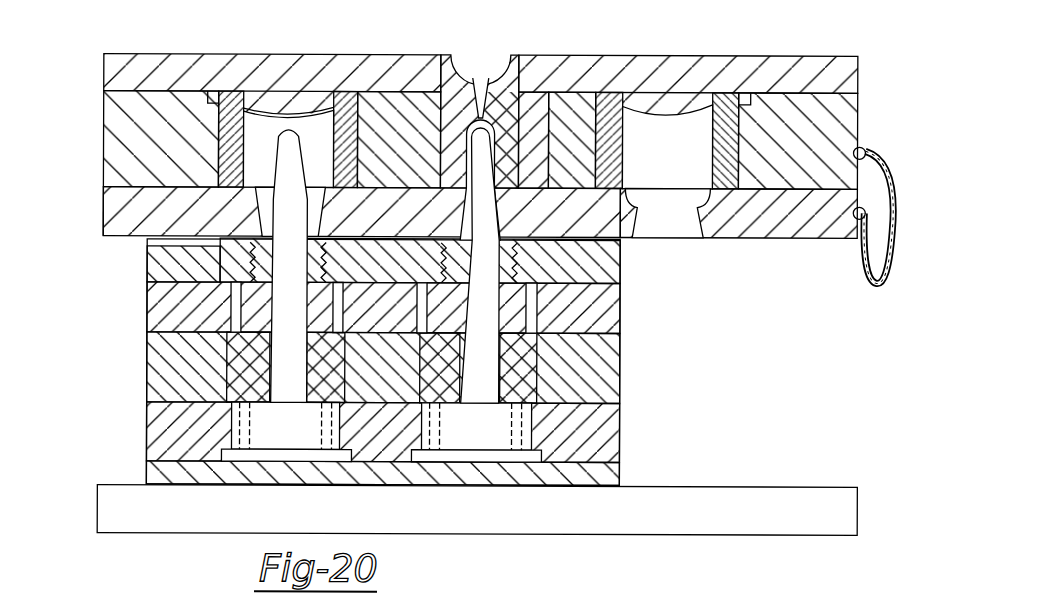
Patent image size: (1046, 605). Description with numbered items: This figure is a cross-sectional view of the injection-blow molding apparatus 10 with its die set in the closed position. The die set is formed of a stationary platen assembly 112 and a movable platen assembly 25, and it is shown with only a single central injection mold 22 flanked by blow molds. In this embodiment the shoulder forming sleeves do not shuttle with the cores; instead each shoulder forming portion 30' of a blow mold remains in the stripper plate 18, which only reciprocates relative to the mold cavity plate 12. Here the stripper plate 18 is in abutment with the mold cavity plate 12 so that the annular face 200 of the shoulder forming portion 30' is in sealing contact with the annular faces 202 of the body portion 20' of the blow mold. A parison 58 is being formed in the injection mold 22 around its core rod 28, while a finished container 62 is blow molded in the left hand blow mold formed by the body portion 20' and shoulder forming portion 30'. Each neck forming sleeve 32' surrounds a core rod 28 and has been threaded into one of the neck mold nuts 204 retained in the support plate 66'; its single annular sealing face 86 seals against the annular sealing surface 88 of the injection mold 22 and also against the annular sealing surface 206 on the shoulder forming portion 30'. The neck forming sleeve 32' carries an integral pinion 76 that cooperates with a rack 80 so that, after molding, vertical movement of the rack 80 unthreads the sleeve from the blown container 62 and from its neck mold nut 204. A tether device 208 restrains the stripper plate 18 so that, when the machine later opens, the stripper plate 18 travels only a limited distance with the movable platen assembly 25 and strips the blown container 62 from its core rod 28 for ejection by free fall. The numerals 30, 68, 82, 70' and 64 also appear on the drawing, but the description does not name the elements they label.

The stationary platen assembly 112 is at (717, 44).
The mold cavity plate 12 is at (103, 123).
The injection mold 22 is at (511, 76).
The body portion of the blow mold 20' is at (500, 140).
The annular face 200 is at (226, 180).
The annular faces 202 is at (347, 186).
The finished container 62 is at (287, 117).
The punch 30 is at (279, 266).
The shoulder forming portion of the blow mold 30' is at (714, 189).
The injection-blow molding apparatus 10 is at (95, 216).
The stripper plate 18 is at (103, 198).
The annular sealing surface 206 is at (258, 232).
The parison 58 is at (462, 205).
The annular sealing surface 88 is at (480, 172).
The annular sealing face 86 is at (537, 216).
The movable platen assembly 25 is at (142, 284).
The support plate 66' is at (410, 261).
The neck mold nuts 204 is at (236, 300).
The neck forming sleeve 32' is at (374, 361).
The collar 68 is at (620, 323).
The bolster plate 82 is at (615, 360).
The collar 70' is at (548, 377).
The pinion 76 is at (230, 337).
The core rod 28 is at (610, 416).
The rack 80 is at (345, 335).
The base plate 64 is at (603, 448).
The tether device 208 is at (877, 283).